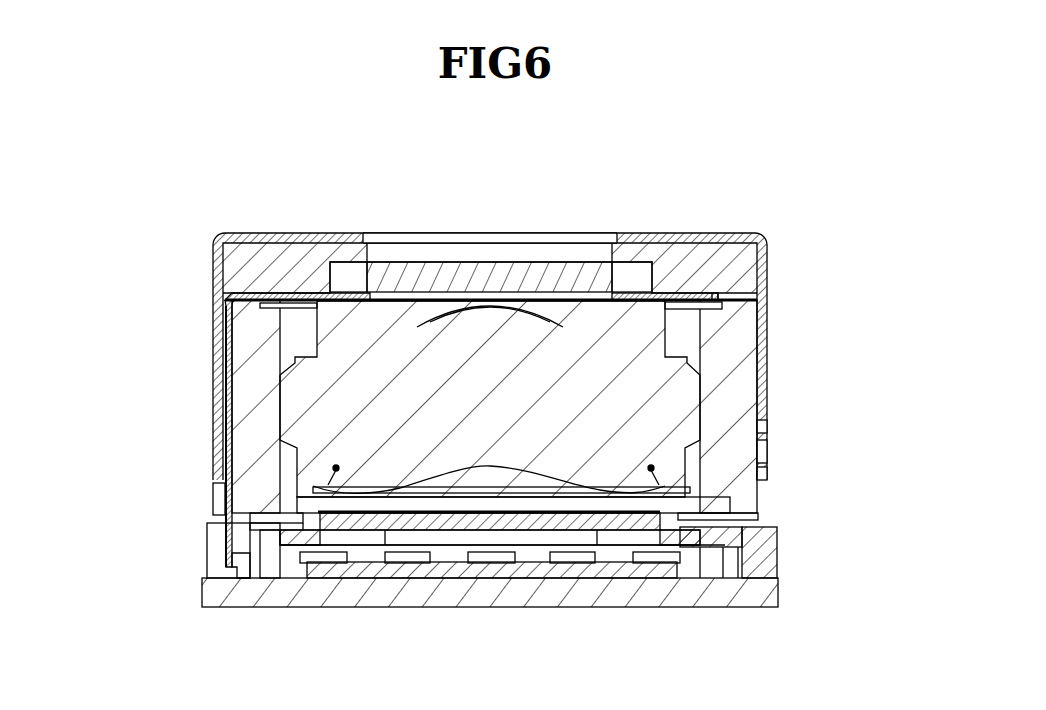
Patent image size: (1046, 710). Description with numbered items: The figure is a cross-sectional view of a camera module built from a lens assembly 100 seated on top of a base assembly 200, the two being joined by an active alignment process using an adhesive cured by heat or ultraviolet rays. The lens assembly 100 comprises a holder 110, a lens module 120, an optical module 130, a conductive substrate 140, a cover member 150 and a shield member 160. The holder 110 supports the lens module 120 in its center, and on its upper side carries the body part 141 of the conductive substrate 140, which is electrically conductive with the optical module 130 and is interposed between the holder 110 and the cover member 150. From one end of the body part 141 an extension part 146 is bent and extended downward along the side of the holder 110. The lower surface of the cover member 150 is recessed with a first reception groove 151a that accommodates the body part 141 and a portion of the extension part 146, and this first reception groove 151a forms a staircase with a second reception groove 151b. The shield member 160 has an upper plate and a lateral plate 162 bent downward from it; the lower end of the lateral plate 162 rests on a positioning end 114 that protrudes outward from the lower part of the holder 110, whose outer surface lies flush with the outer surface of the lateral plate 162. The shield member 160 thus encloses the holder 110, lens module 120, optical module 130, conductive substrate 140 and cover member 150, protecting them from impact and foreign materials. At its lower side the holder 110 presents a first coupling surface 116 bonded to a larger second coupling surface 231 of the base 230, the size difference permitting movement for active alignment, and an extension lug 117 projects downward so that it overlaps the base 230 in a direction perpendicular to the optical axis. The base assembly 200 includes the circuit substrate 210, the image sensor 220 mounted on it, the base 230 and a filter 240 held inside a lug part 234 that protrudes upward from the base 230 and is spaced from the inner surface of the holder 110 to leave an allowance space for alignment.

The lens assembly 100 is at (205, 316).
The holder 110 is at (740, 363).
The positioning end 114 is at (218, 496).
The first coupling surface 116 is at (748, 517).
The extension lug 117 is at (228, 550).
The lens module 120 is at (650, 412).
The optical module 130 is at (500, 275).
The conductive substrate 140 is at (531, 234).
The body part 141 is at (297, 298).
The extension part 146 is at (228, 408).
The cover member 150 is at (745, 295).
The first reception groove 151a is at (735, 283).
The second reception groove 151b is at (630, 268).
The shield member 160 is at (447, 334).
The lateral plate 162 is at (220, 457).
The base assembly 200 is at (796, 583).
The circuit substrate 210 is at (436, 592).
The image sensor 220 is at (511, 583).
The base 230 is at (265, 545).
The second coupling surface 231 is at (713, 537).
The lug part 234 is at (300, 517).
The filter 240 is at (352, 528).